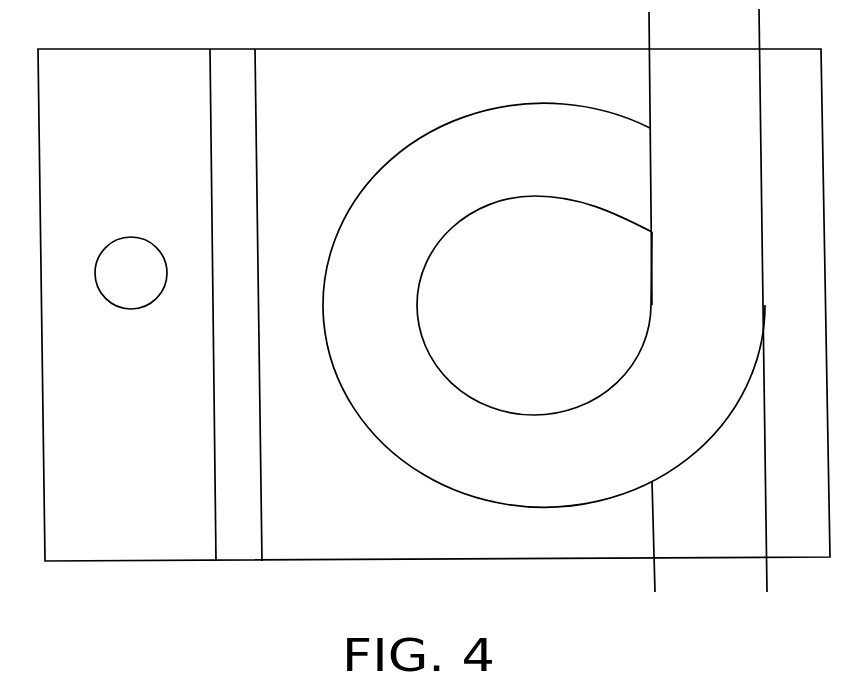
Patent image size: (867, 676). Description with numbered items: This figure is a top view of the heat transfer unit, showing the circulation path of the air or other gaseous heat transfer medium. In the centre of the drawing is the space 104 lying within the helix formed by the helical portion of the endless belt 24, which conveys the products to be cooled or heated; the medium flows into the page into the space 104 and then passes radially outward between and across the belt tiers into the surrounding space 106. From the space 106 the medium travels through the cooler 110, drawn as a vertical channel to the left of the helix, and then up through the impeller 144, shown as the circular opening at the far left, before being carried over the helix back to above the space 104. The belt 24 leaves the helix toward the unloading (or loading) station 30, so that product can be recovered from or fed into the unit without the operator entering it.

The endless belt 24 is at (728, 584).
The unloading (or loading) station 30 is at (717, 32).
The space within the helix 104 is at (563, 305).
The space outside the belt tiers 106 is at (322, 180).
The cooler 110 is at (249, 271).
The impeller 144 is at (116, 240).